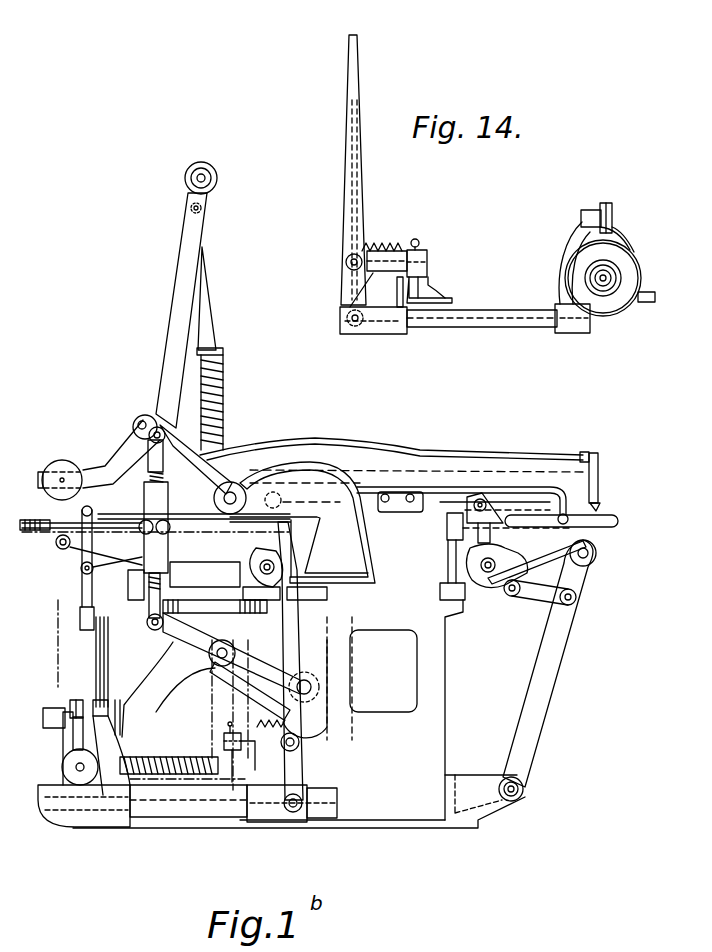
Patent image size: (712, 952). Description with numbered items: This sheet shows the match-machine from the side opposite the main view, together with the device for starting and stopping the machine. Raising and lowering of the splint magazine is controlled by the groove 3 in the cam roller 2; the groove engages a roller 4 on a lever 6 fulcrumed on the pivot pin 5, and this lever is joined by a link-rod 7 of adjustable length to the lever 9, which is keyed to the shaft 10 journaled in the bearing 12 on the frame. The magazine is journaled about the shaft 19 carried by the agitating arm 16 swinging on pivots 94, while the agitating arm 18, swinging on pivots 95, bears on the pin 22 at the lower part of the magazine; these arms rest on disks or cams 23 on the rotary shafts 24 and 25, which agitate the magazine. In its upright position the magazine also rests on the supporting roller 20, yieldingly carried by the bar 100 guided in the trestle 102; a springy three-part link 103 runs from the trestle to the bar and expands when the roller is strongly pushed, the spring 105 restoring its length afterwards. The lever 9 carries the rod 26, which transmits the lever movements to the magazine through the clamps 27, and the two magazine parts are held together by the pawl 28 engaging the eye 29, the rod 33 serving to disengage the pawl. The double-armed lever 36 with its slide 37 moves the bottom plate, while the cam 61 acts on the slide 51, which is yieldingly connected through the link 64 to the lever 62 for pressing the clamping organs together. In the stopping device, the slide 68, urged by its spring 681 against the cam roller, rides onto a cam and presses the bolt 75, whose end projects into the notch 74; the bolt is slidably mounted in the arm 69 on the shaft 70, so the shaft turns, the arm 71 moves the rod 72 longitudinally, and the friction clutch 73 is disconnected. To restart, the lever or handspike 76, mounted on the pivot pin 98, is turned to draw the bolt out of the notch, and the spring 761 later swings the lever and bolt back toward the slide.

In FIG. 1B, the cam roller 2 is at (147, 688).
In FIG. 1B, the groove 3 is at (221, 662).
In FIG. 1B, the roller 4 is at (216, 663).
In FIG. 1B, the pivot pin 5 is at (311, 688).
In FIG. 1B, the lever 6 is at (250, 694).
In FIG. 1B, the link-rod 7 is at (168, 498).
In FIG. 1B, the lever 9 is at (178, 450).
In FIG. 1B, the shaft 10 is at (232, 491).
In FIG. 1B, the bearing 12 is at (368, 538).
In FIG. 1B, the agitating arm 16 is at (367, 493).
In FIG. 1B, the agitating arm 18 is at (466, 496).
In FIG. 1B, the shaft 19 is at (289, 462).
In FIG. 1B, the supporting roller 20 is at (186, 177).
In FIG. 1B, the pin 22 is at (487, 535).
In FIG. 1B, the disks or cams 23 is at (511, 561).
In FIG. 1B, the rotary shaft 24 is at (294, 563).
In FIG. 1B, the rotary shaft 25 is at (262, 585).
In FIG. 1B, the rod 26 is at (597, 538).
In FIG. 1B, the clamps 27 is at (619, 520).
In FIG. 1B, the pawl 28 is at (600, 467).
In FIG. 1B, the eye 29 is at (600, 503).
In FIG. 1B, the rod 33 is at (521, 455).
In FIG. 1B, the double-armed lever 36 is at (82, 590).
In FIG. 1B, the slide 37 is at (121, 513).
In FIG. 1B, the slide 51 is at (462, 600).
In FIG. 1B, the cam 61 is at (268, 606).
In FIG. 1B, the lever 62 is at (558, 679).
In FIG. 1B, the link 64 is at (532, 598).
In FIG. 14, the slide 68 is at (427, 254).
In FIG. 1B, the slide 68 is at (224, 742).
In FIG. 1B, the spring 681 is at (228, 723).
In FIG. 14, the arm 69 is at (383, 299).
In FIG. 1B, the arm 69 is at (267, 812).
In FIG. 14, the shaft 70 is at (482, 313).
In FIG. 1B, the shaft 70 is at (198, 808).
In FIG. 14, the arm 71 is at (562, 258).
In FIG. 1B, the arm 71 is at (118, 765).
In FIG. 14, the rod 72 is at (607, 204).
In FIG. 1B, the rod 72 is at (70, 698).
In FIG. 14, the friction clutch 73 is at (642, 273).
In FIG. 14, the notch 74 is at (421, 248).
In FIG. 14, the bolt 75 is at (349, 256).
In FIG. 1B, the bolt 75 is at (302, 753).
In FIG. 14, the lever or handspike 76 is at (363, 176).
In FIG. 1B, the lever or handspike 76 is at (297, 644).
In FIG. 14, the spring 761 is at (385, 244).
In FIG. 1B, the spring 761 is at (312, 716).
In FIG. 1B, the pivots 94 is at (386, 494).
In FIG. 1B, the pivots 95 is at (411, 494).
In FIG. 14, the pivot pin 98 is at (354, 326).
In FIG. 1B, the bar 100 is at (182, 247).
In FIG. 1B, the trestle 102 is at (96, 617).
In FIG. 1B, the springy three-part link 103 is at (209, 289).
In FIG. 1B, the spring 105 is at (219, 380).